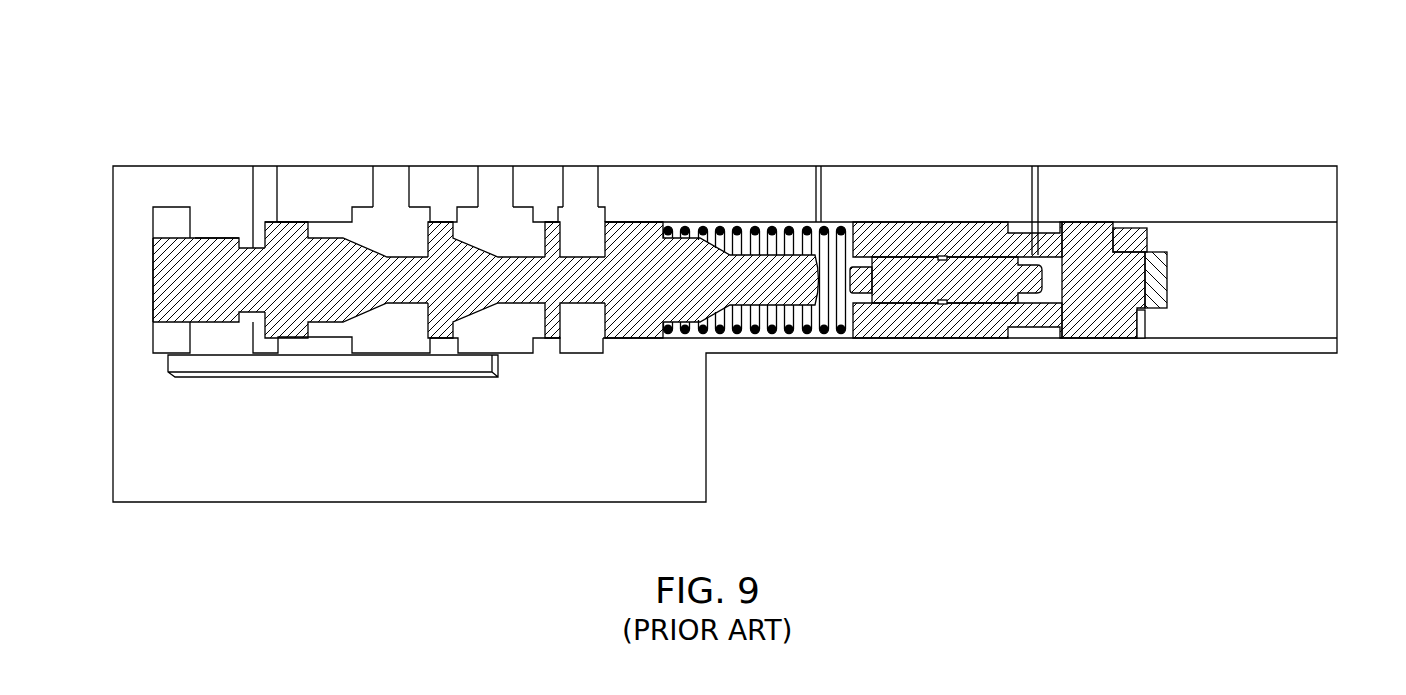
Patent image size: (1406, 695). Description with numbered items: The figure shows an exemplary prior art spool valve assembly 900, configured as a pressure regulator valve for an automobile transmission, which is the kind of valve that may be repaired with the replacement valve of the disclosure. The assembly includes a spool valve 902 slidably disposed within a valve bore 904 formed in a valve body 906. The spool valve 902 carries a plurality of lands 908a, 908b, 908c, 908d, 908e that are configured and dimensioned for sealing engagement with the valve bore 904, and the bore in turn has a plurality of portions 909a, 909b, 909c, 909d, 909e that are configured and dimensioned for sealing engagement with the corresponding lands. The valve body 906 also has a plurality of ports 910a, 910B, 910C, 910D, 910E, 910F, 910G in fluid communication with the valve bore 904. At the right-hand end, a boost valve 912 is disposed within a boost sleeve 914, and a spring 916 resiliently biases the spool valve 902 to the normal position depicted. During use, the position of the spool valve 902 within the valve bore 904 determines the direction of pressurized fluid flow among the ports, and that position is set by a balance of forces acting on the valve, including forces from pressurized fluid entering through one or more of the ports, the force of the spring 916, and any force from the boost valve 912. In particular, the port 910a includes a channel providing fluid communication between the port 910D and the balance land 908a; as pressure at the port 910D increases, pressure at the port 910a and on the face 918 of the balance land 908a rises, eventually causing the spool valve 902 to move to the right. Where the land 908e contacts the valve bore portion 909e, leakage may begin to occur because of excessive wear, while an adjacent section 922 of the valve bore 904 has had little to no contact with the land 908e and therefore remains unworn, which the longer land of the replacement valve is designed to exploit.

The prior art spool valve assembly 900 is at (1258, 62).
The spool valve 902 is at (611, 357).
The valve bore 904 is at (1265, 315).
The valve body 906 is at (1258, 181).
The balance land 908a is at (170, 290).
The land 908b is at (297, 337).
The land 908c is at (447, 338).
The land 908d is at (553, 338).
The land 908e is at (653, 340).
The valve bore portion 909a is at (247, 235).
The valve bore portion 909b is at (348, 215).
The valve bore portion 909c is at (452, 216).
The valve bore portion 909d is at (558, 216).
The valve bore portion 909e is at (690, 219).
The port 910a is at (202, 378).
The port 910B is at (270, 165).
The port 910C is at (393, 165).
The port 910D is at (497, 165).
The port 910E is at (582, 165).
The port 910F is at (817, 165).
The port 910G is at (1035, 165).
The boost valve 912 is at (978, 293).
The boost sleeve 914 is at (1087, 243).
The spring 916 is at (798, 325).
The face of balance land 918 is at (153, 247).
The unworn section of valve bore 922 is at (717, 223).